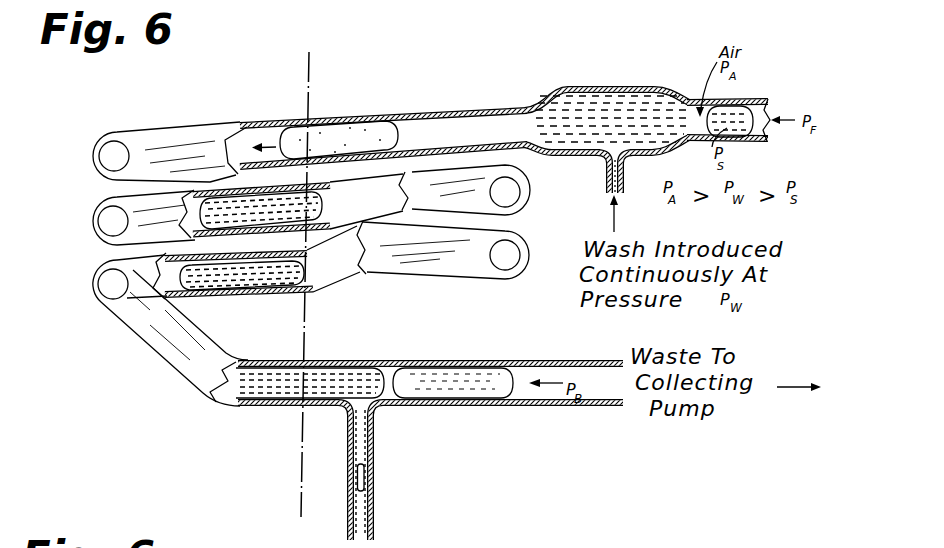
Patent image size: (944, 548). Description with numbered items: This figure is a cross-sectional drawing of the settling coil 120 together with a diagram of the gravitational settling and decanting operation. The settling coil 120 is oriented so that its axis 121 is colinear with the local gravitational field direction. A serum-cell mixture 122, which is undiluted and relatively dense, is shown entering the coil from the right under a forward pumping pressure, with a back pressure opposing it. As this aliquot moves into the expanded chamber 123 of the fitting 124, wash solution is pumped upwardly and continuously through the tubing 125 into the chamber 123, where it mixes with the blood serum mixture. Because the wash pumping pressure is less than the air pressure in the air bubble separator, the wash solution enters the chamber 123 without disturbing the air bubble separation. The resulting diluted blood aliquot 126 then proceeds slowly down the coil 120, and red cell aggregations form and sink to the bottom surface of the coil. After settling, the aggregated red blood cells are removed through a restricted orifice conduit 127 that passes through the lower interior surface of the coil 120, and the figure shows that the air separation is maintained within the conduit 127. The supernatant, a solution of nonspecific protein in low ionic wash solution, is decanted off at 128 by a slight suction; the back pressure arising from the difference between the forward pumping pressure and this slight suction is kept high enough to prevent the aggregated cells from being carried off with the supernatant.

The settling coil 120 is at (95, 298).
The axis 121 is at (302, 474).
The serum-cell mixture 122 is at (745, 103).
The expanded chamber 123 is at (577, 108).
The fitting 124 is at (660, 87).
The tubing 125 is at (606, 184).
The diluted blood aliquot 126 is at (400, 138).
The restricted orifice conduit 127 is at (373, 428).
The decanting point 128 is at (490, 345).